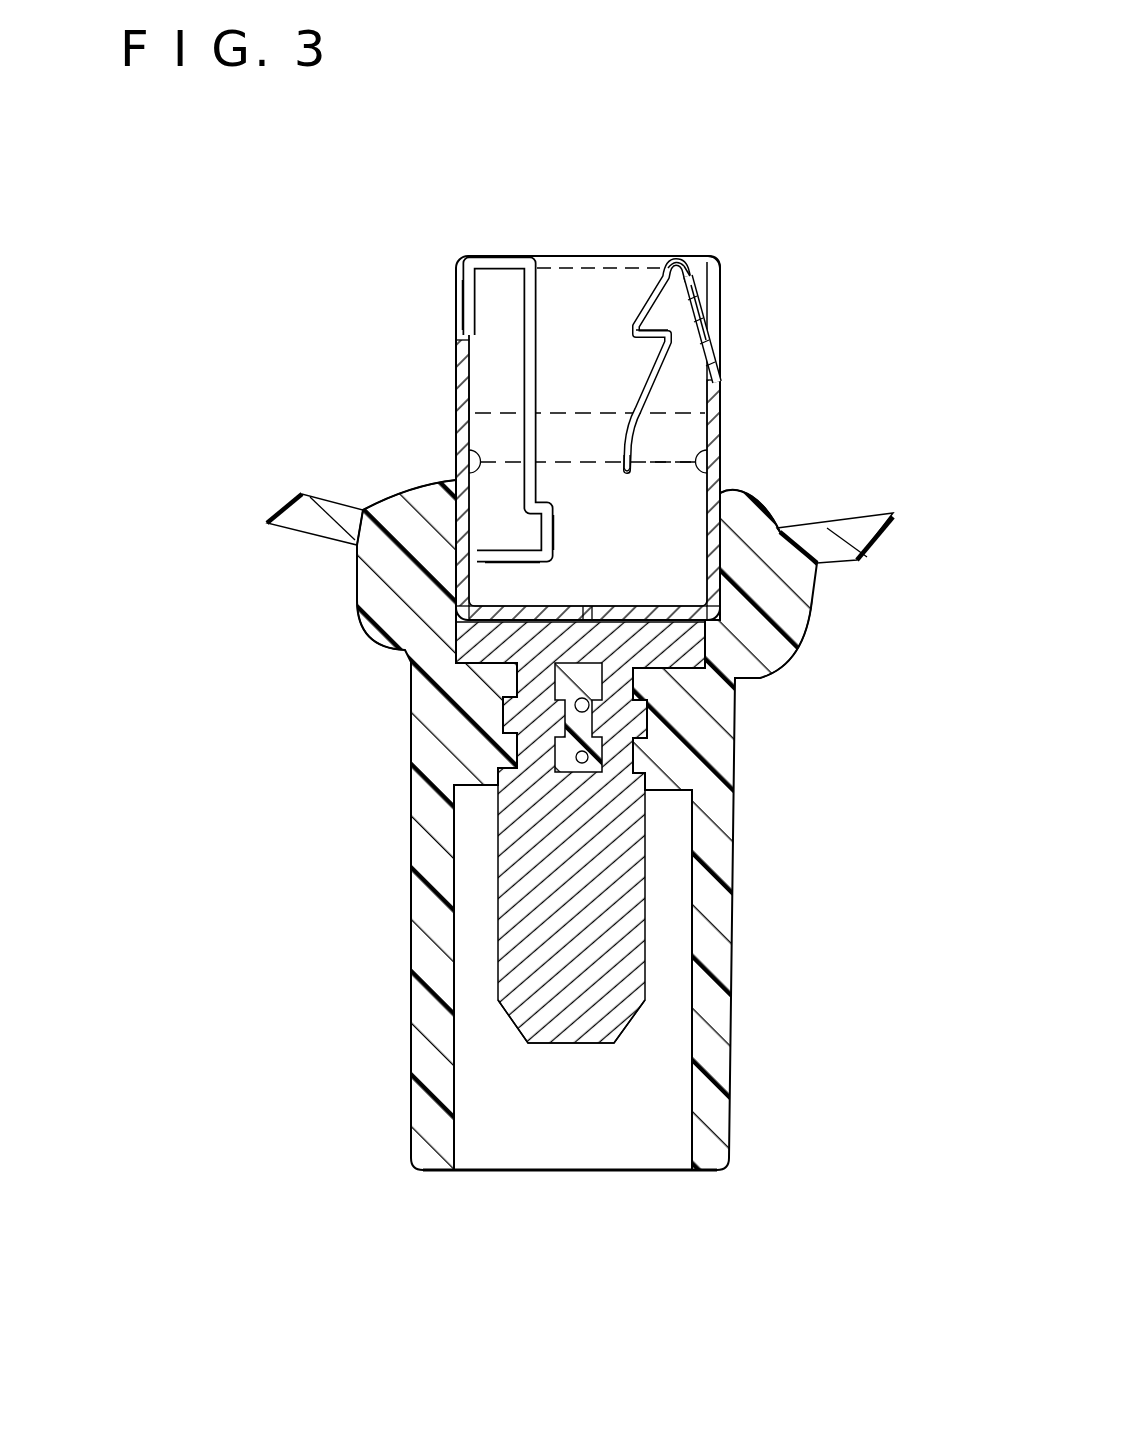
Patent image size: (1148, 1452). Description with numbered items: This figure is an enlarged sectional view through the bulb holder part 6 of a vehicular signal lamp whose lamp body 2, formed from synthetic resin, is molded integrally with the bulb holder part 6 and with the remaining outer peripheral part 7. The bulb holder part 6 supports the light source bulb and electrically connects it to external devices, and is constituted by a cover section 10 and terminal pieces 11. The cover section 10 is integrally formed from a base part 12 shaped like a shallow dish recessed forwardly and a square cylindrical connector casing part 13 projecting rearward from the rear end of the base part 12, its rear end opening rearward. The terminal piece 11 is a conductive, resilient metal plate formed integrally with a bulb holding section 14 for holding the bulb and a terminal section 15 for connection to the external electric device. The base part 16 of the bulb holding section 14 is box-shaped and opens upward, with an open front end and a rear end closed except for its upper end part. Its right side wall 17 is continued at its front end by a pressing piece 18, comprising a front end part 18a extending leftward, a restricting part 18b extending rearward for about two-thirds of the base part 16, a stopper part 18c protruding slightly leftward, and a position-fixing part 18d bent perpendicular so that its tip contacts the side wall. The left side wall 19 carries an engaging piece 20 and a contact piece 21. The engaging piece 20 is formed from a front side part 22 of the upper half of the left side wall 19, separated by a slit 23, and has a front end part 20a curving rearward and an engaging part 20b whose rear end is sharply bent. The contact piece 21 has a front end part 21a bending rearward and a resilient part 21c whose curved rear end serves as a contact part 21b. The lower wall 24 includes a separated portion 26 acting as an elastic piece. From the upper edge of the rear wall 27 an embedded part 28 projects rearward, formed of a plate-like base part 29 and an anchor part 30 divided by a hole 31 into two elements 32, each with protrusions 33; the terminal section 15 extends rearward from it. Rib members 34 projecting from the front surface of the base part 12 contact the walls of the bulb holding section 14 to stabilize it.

The lamp body 2 is at (270, 524).
The bulb holder part 6 is at (417, 937).
The outer peripheral part 7 is at (880, 555).
The cover section 10 is at (733, 928).
The terminal piece 11 is at (577, 777).
The base part 12 is at (367, 592).
The connector casing part 13 is at (733, 1017).
The bulb holding section 14 is at (461, 352).
The terminal section 15 is at (570, 1035).
The base part 16 is at (702, 457).
The right side wall 17 is at (460, 415).
The pressing piece 18 is at (563, 265).
The front end part 18a is at (500, 258).
The restricting part 18b is at (466, 274).
The stopper part 18c is at (543, 498).
The position-fixing part 18d is at (508, 560).
The left side wall 19 is at (715, 462).
The engaging piece 20 is at (614, 268).
The front end part 20a is at (683, 262).
The engaging part 20b is at (637, 322).
The contact piece 21 is at (707, 377).
The front end part 21a is at (702, 262).
The contact part 21b is at (627, 443).
The resilient part 21c is at (703, 407).
The front side part 22 is at (717, 333).
The slit 23 is at (722, 278).
The lower wall 24 is at (552, 265).
The separated portion 26 is at (461, 385).
The rear wall 27 is at (655, 692).
The embedded part 28 is at (512, 678).
The base part 29 is at (690, 642).
The anchor part 30 is at (627, 760).
The hole 31 is at (560, 820).
The divided element 32 is at (505, 740).
The protrusion 33 is at (503, 705).
The rib member 34 is at (438, 505).